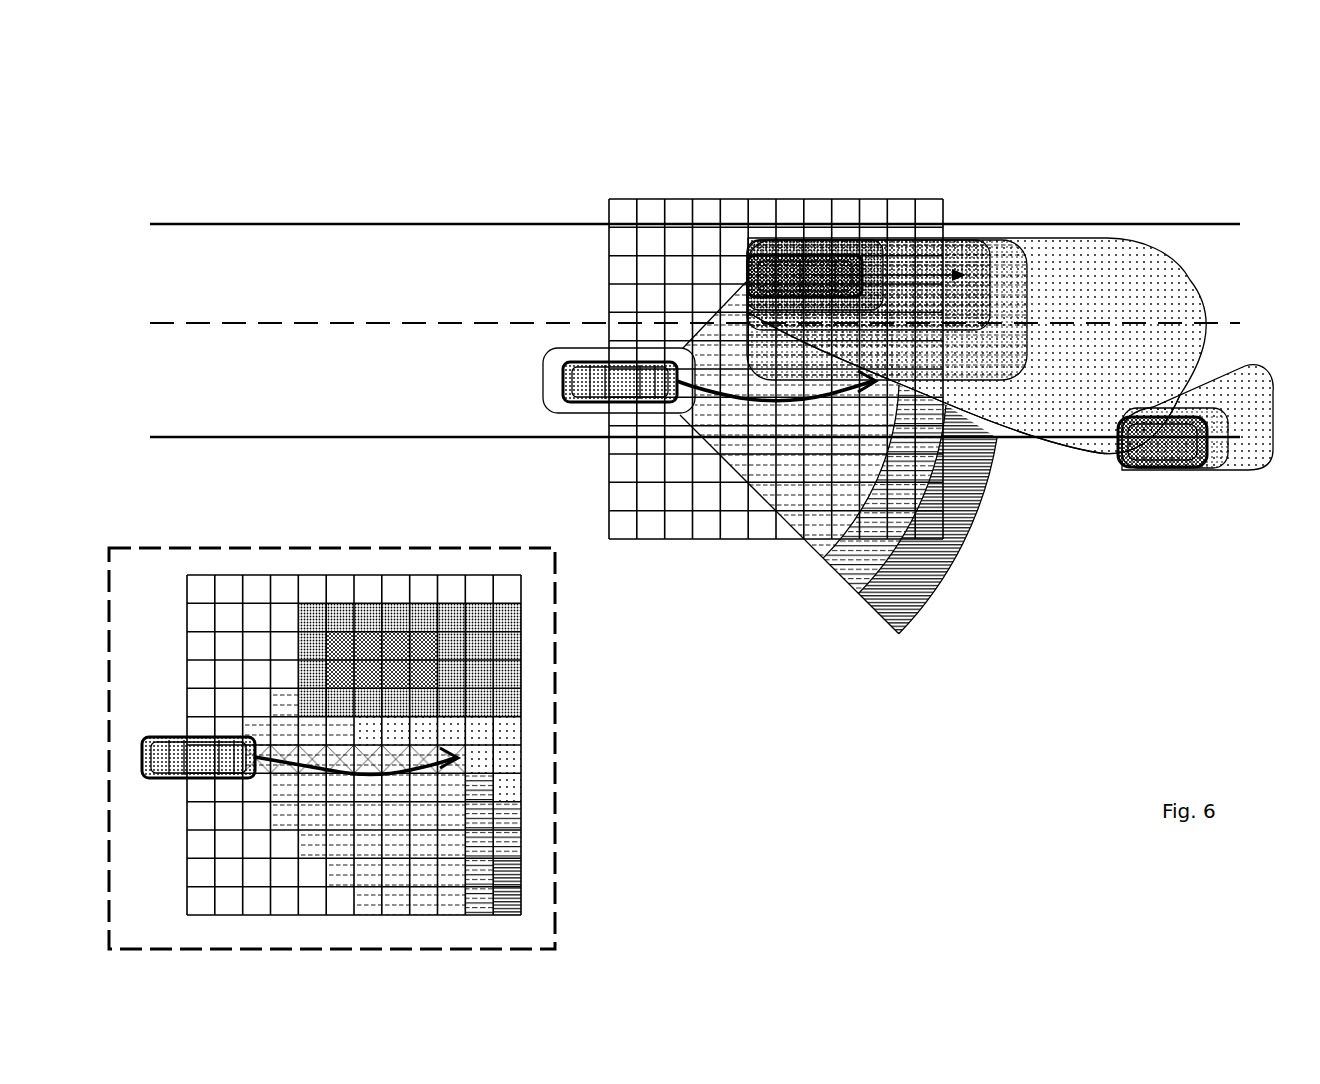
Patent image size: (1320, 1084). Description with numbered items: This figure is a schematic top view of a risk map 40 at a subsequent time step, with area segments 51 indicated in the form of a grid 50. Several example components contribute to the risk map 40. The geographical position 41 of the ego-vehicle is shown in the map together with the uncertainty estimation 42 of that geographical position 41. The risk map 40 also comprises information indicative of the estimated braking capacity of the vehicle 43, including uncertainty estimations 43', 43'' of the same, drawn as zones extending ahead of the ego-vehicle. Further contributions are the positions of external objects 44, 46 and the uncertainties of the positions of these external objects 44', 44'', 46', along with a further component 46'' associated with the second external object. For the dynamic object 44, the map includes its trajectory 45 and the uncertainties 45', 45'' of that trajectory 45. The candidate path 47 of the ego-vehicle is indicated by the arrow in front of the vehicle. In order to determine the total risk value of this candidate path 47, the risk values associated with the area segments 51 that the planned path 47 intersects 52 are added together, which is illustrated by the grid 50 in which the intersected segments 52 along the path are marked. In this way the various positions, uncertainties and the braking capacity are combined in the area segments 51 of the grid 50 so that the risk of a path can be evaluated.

The risk map 40 is at (678, 658).
The geographical position of the ego-vehicle 41 is at (596, 402).
The uncertainty estimation of the geographical position 42 is at (558, 407).
The estimated braking capacity of the vehicle 43 is at (789, 441).
The uncertainty estimation of the braking capacity 43' is at (884, 530).
The uncertainty estimation of the braking capacity 43'' is at (928, 560).
The external object 44 is at (594, 416).
The uncertainty of the position of the external object 44' is at (590, 430).
The uncertainty of the position of the external object 44'' is at (918, 269).
The trajectory of the dynamic object 45 is at (868, 220).
The uncertainty of the trajectory 45' is at (977, 314).
The uncertainty of the trajectory 45'' is at (964, 418).
The external object 46 is at (1147, 483).
The uncertainty of the position of the external object 46' is at (1177, 477).
The component contributing to the risk map 46'' is at (1210, 386).
The candidate path 47 is at (753, 397).
The grid 50 is at (606, 148).
The area segments 51 is at (683, 210).
The intersected area segments 52 is at (453, 750).